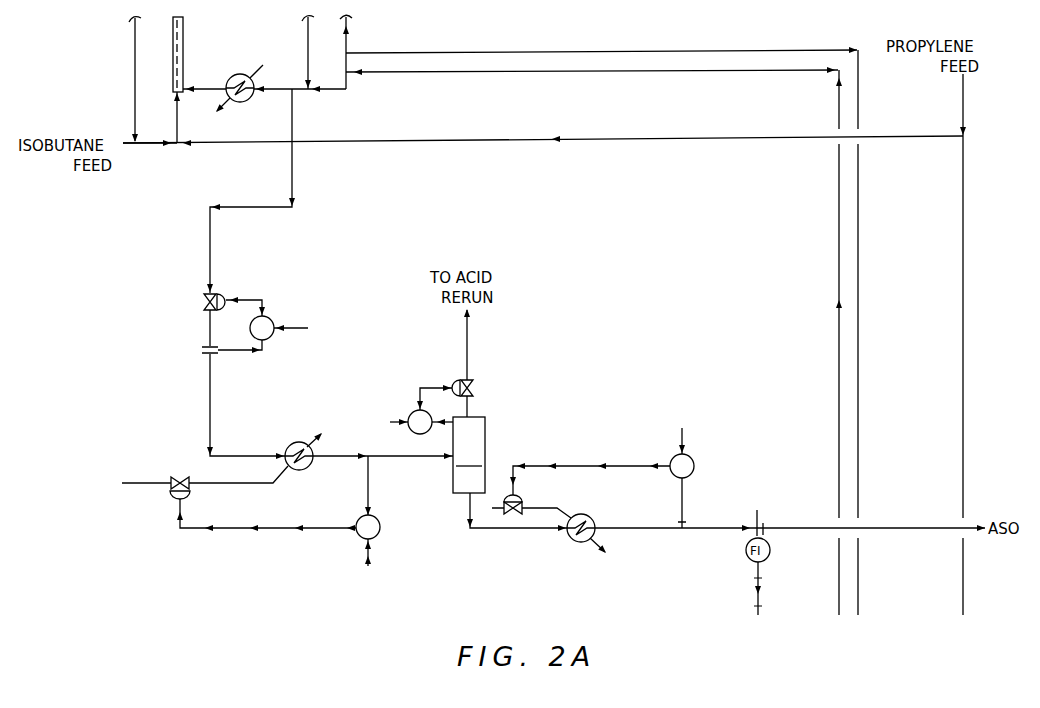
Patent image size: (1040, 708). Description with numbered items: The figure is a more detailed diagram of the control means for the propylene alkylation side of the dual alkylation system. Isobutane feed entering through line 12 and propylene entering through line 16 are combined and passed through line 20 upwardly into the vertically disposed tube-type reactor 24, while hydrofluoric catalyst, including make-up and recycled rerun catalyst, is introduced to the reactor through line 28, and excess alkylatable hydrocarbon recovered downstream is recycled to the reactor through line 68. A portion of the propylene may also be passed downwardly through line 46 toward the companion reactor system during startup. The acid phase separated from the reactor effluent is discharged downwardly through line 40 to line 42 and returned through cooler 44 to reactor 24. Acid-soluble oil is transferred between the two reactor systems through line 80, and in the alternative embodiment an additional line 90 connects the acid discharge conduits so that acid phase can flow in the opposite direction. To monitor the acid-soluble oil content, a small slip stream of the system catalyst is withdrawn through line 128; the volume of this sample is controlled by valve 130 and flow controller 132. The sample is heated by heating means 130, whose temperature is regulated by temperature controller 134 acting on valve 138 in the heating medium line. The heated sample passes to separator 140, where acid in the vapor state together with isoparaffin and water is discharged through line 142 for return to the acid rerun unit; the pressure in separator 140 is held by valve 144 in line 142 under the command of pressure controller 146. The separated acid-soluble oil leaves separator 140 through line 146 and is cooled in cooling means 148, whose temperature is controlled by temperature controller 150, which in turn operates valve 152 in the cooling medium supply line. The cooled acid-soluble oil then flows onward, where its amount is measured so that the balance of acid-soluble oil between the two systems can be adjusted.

The isobutane feed line 12 is at (129, 144).
The propylene feed line 16 is at (963, 115).
The combined feed line 20 is at (177, 122).
The tube-type reactor 24 is at (185, 25).
The catalyst line 28 is at (308, 37).
The acid phase discharge line 40 is at (350, 25).
The acid recycle line 42 is at (338, 90).
The cooler 44 is at (238, 75).
The propylene line 46 is at (963, 236).
The alkylatable hydrocarbon recycle line 68 is at (135, 37).
The acid-soluble oil transfer line 80 is at (575, 71).
The acid phase transfer line 90 is at (588, 51).
The sample slip stream line 128 is at (262, 207).
The valve and heating means 130 is at (205, 292).
The flow controller 132 is at (270, 320).
The temperature controller 134 is at (357, 538).
The heating medium valve 138 is at (179, 477).
The separator 140 is at (469, 455).
The vapor discharge line 142 is at (470, 327).
The pressure control valve 144 is at (477, 389).
The pressure controller and acid-soluble oil line 146 is at (418, 403).
The cooling means 148 is at (592, 516).
The temperature controller 150 is at (692, 458).
The cooling medium valve 152 is at (523, 500).